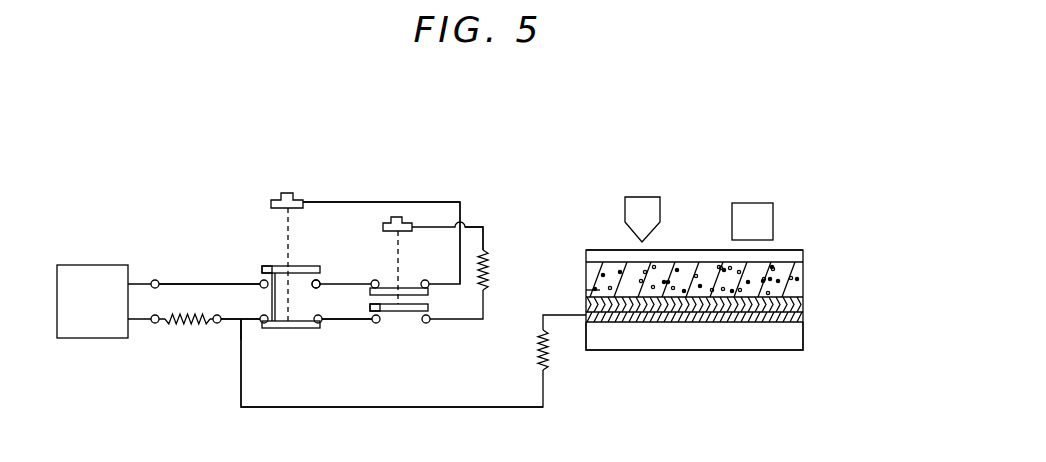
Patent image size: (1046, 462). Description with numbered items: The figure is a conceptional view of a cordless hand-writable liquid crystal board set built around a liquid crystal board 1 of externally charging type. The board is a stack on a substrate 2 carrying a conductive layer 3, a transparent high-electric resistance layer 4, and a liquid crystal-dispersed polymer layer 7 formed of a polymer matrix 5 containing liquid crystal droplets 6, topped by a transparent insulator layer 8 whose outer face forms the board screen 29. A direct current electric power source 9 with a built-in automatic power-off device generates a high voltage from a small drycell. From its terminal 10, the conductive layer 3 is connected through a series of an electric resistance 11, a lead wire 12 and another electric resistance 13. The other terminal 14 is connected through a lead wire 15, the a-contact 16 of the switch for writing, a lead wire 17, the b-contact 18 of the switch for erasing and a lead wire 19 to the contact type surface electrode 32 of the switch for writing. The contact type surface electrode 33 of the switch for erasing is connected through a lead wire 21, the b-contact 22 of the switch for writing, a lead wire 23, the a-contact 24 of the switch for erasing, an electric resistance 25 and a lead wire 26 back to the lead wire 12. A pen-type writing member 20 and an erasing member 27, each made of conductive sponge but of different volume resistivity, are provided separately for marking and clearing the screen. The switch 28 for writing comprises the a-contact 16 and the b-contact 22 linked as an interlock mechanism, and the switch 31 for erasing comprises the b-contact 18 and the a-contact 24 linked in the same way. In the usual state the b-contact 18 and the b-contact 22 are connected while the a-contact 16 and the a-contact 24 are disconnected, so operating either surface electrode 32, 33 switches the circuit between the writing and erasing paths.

The liquid crystal board of externally charging type 1 is at (691, 294).
The substrate 2 is at (753, 340).
The conductive layer 3 is at (803, 318).
The transparent high-electric resistance layer 4 is at (803, 302).
The polymer matrix 5 is at (587, 277).
The liquid crystal droplet 6 is at (603, 292).
The liquid crystal-dispersed polymer layer 7 is at (685, 275).
The transparent insulator layer 8 is at (597, 253).
The electric power source 9 is at (82, 272).
The terminal 10 is at (147, 322).
The electric resistance 11 is at (177, 325).
The lead wire 12 is at (227, 323).
The electric resistance 13 is at (552, 355).
The terminal 14 is at (140, 283).
The lead wire 15 is at (200, 283).
The a-contact of a switch for writing 16 is at (278, 263).
The lead wire 17 is at (333, 278).
The b-contact of a switch for erasing 18 is at (383, 288).
The lead wire 19 is at (450, 203).
The writing member 20 is at (660, 203).
The lead wire 21 is at (253, 322).
The b-contact of a switch for writing 22 is at (272, 262).
The lead wire 23 is at (358, 327).
The a-contact of a switch for erasing 24 is at (372, 303).
The electric resistance 25 is at (487, 250).
The lead wire 26 is at (477, 223).
The erasing member 27 is at (773, 208).
The switch for writing 28 is at (284, 220).
The board screen 29 is at (687, 247).
The switch for erasing 31 is at (399, 219).
The contact type surface electrode of a switch for writing 32 is at (290, 193).
The contact type surface electrode of a switch for erasing 33 is at (416, 194).